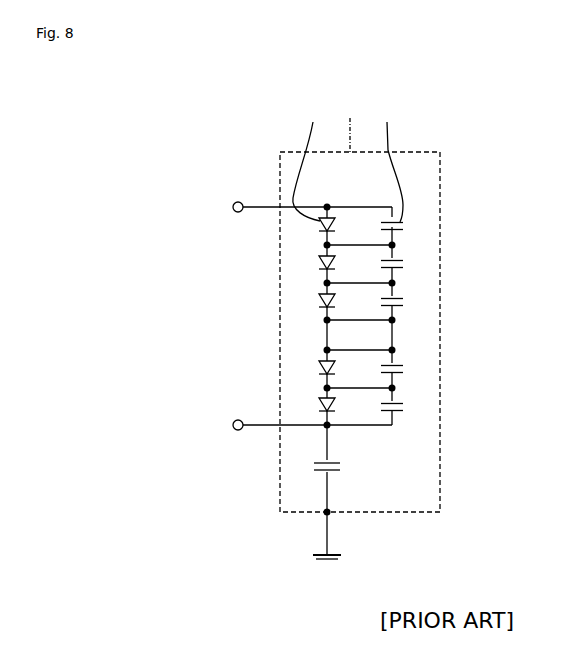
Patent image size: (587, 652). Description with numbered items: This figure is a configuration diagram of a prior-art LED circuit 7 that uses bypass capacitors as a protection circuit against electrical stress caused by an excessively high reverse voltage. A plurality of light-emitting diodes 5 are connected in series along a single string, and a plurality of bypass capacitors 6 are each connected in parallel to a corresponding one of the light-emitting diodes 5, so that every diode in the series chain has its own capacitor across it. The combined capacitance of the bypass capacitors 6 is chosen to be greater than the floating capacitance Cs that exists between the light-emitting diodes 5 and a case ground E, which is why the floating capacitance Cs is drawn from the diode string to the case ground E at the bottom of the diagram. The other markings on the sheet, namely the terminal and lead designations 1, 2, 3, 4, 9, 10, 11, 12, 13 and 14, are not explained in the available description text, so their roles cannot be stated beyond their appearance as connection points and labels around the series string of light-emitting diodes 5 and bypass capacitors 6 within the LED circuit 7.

The input terminal 1 is at (238, 201).
The gate lead 2 is at (314, 166).
The capacitor lead 3 is at (392, 165).
The switching element 4 is at (321, 260).
The light-emitting diode 5 is at (321, 298).
The bypass capacitor 6 is at (321, 365).
The LED circuit 7 is at (349, 126).
The switching element 9 is at (321, 403).
The capacitor 10 is at (403, 267).
The capacitor 11 is at (403, 305).
The capacitor 12 is at (403, 372).
The capacitor 13 is at (403, 410).
The output terminal 14 is at (238, 431).
The floating capacitance Cs is at (338, 472).
The case ground E is at (317, 563).